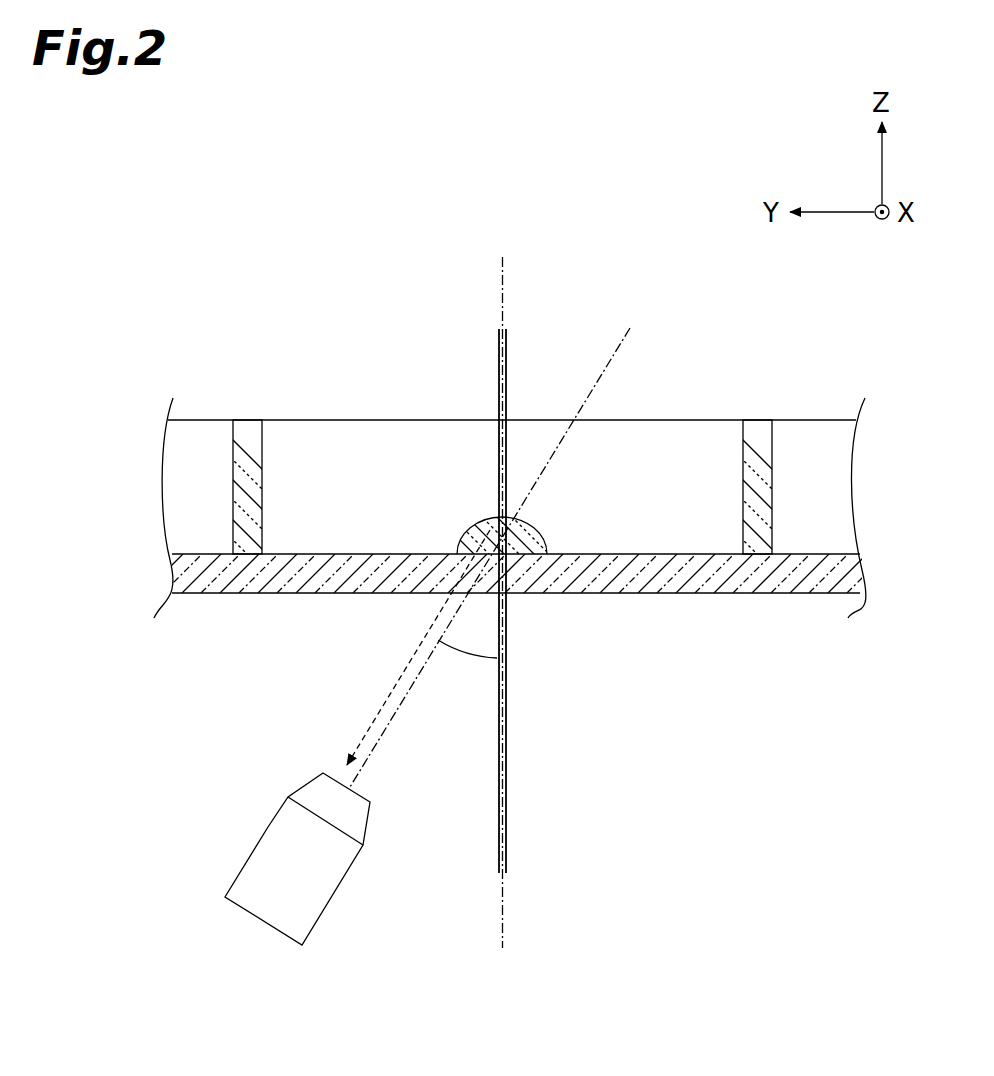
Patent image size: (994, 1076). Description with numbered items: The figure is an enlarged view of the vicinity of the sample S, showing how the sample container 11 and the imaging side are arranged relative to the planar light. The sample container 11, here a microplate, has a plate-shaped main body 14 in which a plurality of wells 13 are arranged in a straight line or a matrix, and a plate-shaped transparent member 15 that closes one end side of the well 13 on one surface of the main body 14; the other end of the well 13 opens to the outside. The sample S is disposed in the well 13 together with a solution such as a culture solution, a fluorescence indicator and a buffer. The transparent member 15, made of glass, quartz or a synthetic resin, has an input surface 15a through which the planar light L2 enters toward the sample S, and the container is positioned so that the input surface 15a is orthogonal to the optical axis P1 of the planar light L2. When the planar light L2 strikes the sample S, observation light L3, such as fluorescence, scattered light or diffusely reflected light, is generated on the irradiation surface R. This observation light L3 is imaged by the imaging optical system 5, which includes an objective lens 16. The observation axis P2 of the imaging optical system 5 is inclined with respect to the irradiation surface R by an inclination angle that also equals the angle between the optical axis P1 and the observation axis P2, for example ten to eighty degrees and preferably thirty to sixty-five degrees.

The sample container 11 is at (187, 360).
The well 13 is at (320, 445).
The main body 14 is at (827, 408).
The transparent member 15 is at (733, 596).
The input surface 15a is at (272, 598).
The objective lens 16 is at (276, 856).
The imaging optical system 5 is at (262, 835).
The optical axis P1 is at (500, 296).
The observation axis P2 is at (392, 706).
The planar light L2 is at (508, 773).
The observation light L3 is at (411, 663).
The sample S is at (470, 526).
The irradiation surface R is at (496, 518).